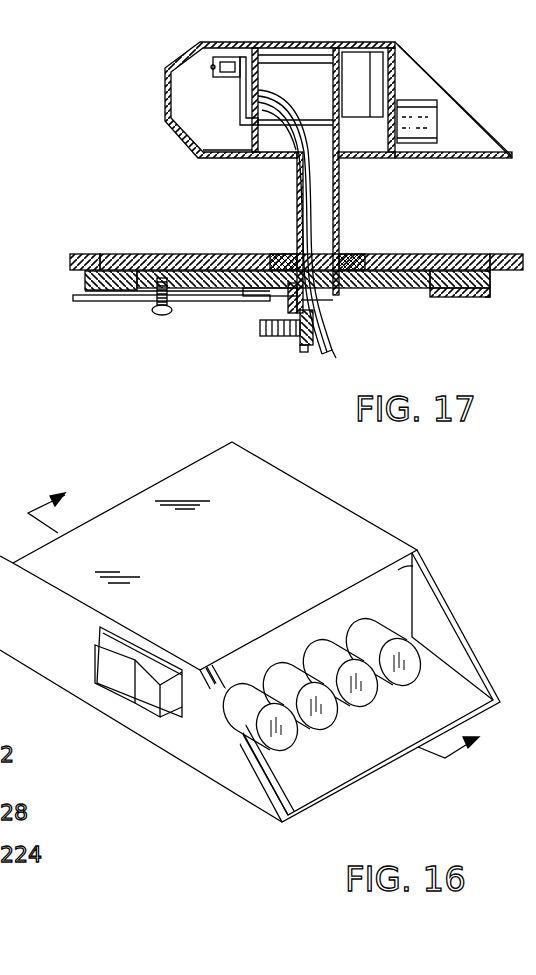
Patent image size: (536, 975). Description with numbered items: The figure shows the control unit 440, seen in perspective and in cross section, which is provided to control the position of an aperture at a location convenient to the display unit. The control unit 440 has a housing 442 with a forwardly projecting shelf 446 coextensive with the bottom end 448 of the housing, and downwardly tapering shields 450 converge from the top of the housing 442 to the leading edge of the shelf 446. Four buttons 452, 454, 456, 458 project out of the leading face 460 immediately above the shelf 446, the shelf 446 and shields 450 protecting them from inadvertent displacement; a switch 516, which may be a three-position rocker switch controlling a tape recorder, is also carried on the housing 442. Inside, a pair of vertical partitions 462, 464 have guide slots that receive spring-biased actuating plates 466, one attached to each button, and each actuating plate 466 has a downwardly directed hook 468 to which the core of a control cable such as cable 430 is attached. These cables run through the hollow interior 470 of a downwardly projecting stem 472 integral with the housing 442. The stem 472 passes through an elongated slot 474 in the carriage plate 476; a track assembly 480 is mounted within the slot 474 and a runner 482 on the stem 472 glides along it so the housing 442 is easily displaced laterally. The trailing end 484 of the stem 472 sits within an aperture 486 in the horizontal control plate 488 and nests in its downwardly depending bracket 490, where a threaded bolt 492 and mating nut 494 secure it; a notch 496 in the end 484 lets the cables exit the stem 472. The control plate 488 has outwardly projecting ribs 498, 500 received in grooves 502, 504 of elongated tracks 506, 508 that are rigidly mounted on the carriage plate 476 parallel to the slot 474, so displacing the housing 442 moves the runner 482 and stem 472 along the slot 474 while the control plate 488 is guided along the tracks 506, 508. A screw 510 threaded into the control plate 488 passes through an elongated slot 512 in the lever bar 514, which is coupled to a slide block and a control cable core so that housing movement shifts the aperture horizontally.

In FIG. 17, the control unit 440 is at (142, 185).
In FIG. 16, the control unit 440 is at (155, 777).
In FIG. 17, the housing 442 is at (178, 52).
In FIG. 16, the housing 442 is at (310, 510).
In FIG. 17, the control cable 430 is at (300, 173).
In FIG. 17, the shelf 446 is at (463, 160).
In FIG. 16, the shelf 446 is at (390, 747).
In FIG. 17, the bottom end 448 is at (383, 158).
In FIG. 17, the shields 450 is at (482, 132).
In FIG. 16, the shields 450 is at (485, 667).
In FIG. 16, the button 452 is at (240, 708).
In FIG. 16, the button 454 is at (290, 690).
In FIG. 17, the button 456 is at (422, 117).
In FIG. 16, the button 456 is at (333, 660).
In FIG. 16, the button 458 is at (373, 637).
In FIG. 16, the leading face 460 is at (400, 570).
In FIG. 17, the vertical partition 462 is at (192, 140).
In FIG. 17, the vertical partition 464 is at (338, 82).
In FIG. 17, the actuating plate 466 is at (243, 100).
In FIG. 17, the hook 468 is at (212, 66).
In FIG. 17, the hollow interior 470 is at (332, 185).
In FIG. 17, the stem 472 is at (340, 220).
In FIG. 17, the elongated slot 474 is at (373, 255).
In FIG. 17, the carriage plate 476 is at (467, 262).
In FIG. 17, the track assembly 480 is at (270, 255).
In FIG. 17, the runner 482 is at (292, 257).
In FIG. 17, the trailing end 484 is at (318, 303).
In FIG. 17, the aperture 486 is at (355, 289).
In FIG. 17, the horizontal control plate 488 is at (203, 284).
In FIG. 17, the bracket 490 is at (297, 349).
In FIG. 17, the threaded bolt 492 is at (261, 327).
In FIG. 17, the nut 494 is at (278, 345).
In FIG. 17, the notch 496 is at (330, 340).
In FIG. 17, the rib 498 is at (117, 291).
In FIG. 17, the rib 500 is at (432, 288).
In FIG. 17, the groove 502 is at (125, 284).
In FIG. 17, the groove 504 is at (470, 298).
In FIG. 17, the elongated track 506 is at (80, 271).
In FIG. 17, the elongated track 508 is at (488, 298).
In FIG. 17, the screw 510 is at (148, 294).
In FIG. 17, the elongated slot 512 is at (248, 297).
In FIG. 17, the lever bar 514 is at (77, 298).
In FIG. 16, the switch 516 is at (120, 677).